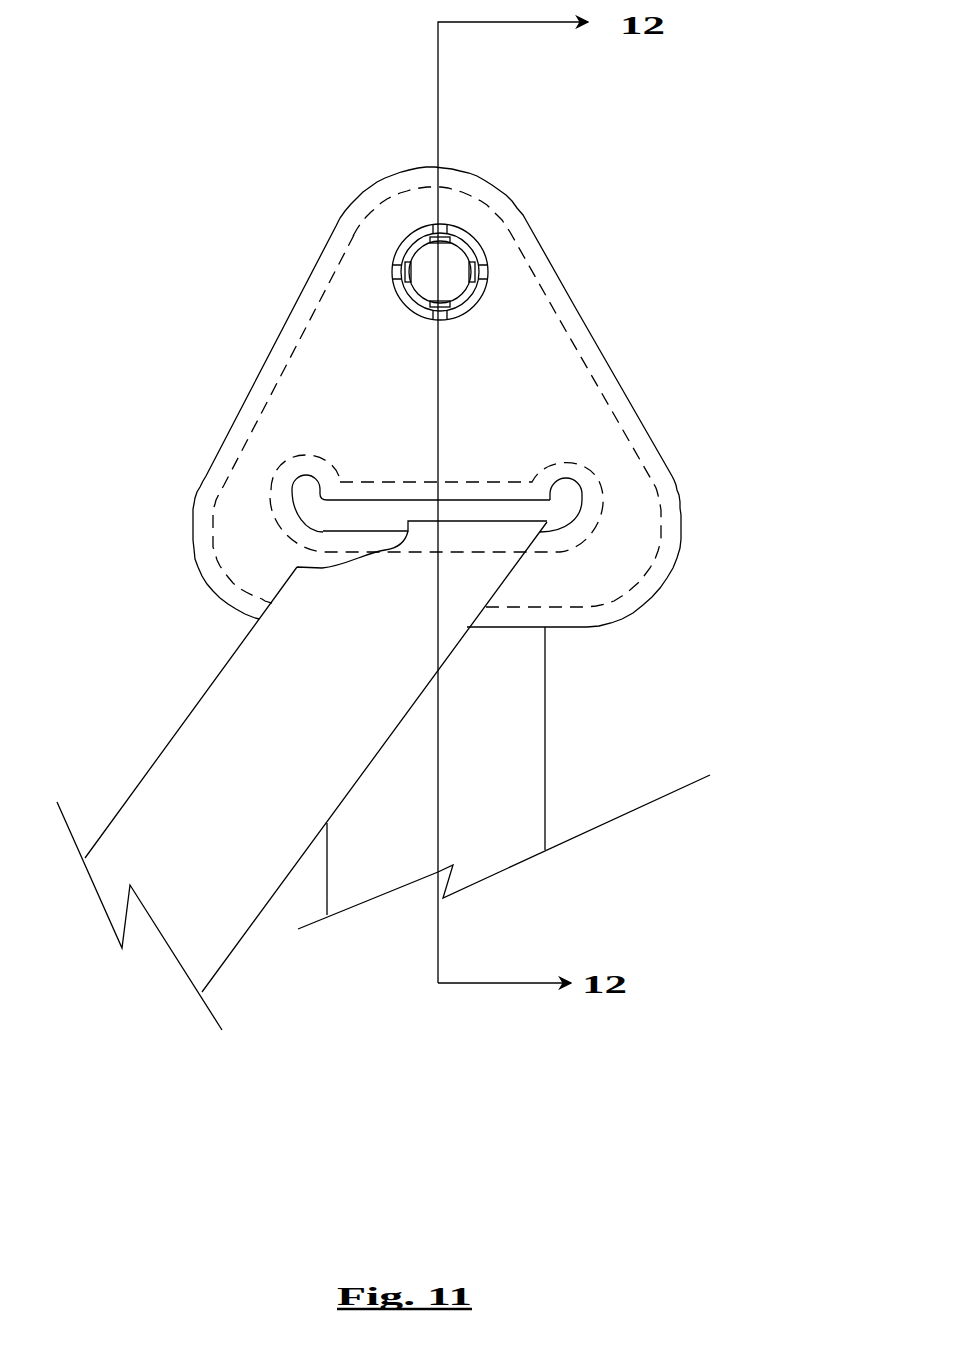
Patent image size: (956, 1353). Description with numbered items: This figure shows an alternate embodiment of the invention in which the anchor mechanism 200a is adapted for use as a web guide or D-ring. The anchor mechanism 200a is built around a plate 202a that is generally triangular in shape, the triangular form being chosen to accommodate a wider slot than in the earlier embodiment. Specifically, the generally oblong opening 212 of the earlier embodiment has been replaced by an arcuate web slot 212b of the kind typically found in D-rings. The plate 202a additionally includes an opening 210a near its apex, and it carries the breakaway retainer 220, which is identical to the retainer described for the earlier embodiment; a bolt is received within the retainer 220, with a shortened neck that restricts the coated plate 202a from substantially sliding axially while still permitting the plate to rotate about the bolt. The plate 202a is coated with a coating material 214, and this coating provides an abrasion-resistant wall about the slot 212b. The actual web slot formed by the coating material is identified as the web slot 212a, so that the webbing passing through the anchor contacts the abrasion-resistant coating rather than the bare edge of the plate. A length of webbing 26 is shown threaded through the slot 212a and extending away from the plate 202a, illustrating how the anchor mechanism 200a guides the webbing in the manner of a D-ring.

The anchor mechanism 200a is at (318, 232).
The plate 202a is at (527, 330).
The aperture 210a is at (457, 223).
The breakaway retainer 220 is at (479, 248).
The coating material 214 is at (238, 410).
The opening 212 is at (555, 508).
The web slot 212a is at (350, 532).
The arcuate web slot 212b is at (500, 481).
The strap 26 is at (200, 783).